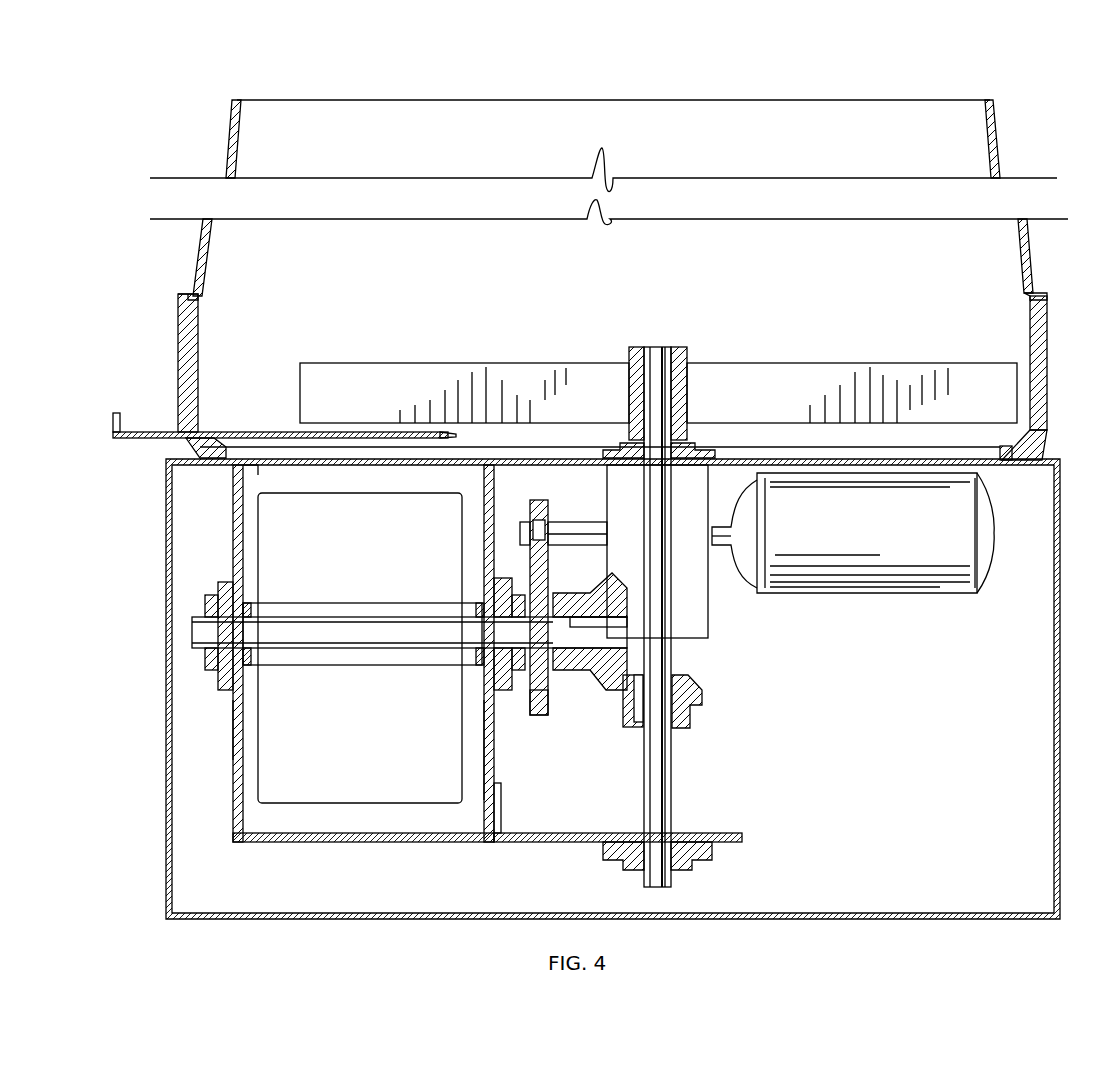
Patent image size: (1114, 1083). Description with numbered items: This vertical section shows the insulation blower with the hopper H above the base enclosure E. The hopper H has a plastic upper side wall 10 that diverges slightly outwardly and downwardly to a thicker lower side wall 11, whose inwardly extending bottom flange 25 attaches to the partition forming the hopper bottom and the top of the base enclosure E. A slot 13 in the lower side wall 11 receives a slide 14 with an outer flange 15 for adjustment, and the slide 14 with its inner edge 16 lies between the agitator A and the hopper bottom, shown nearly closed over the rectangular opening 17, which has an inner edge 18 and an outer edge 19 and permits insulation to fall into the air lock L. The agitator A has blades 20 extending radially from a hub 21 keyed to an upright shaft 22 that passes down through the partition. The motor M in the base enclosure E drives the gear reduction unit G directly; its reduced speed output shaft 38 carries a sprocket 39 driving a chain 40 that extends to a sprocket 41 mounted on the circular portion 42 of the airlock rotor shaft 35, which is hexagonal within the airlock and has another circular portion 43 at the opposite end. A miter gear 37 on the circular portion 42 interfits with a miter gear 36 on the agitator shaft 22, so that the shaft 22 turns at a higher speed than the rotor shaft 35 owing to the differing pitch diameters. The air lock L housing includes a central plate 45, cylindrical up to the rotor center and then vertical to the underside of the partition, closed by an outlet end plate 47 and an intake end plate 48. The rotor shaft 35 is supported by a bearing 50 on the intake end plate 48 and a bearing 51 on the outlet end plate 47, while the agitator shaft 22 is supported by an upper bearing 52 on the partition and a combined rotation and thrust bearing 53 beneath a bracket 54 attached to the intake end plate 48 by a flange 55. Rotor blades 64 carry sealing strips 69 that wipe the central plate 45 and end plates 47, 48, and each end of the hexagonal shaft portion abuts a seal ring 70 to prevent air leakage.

The upper side wall 10 is at (232, 148).
The lower side wall 11 is at (178, 340).
The slot 13 is at (200, 440).
The slide 14 is at (250, 432).
The outer flange 15 is at (120, 420).
The inner edge 16 is at (463, 437).
The rectangular opening 17 is at (366, 460).
The inner edge 18 is at (483, 470).
The outer edge 19 is at (248, 463).
The blades 20 is at (330, 363).
The hub 21 is at (636, 348).
The upright shaft 22 is at (660, 345).
The bottom flange 25 is at (210, 460).
The airlock rotor shaft 35 is at (386, 648).
The miter gear 36 is at (702, 700).
The miter gear 37 is at (598, 593).
The reduced speed output shaft 38 is at (590, 524).
The sprocket 39 is at (539, 504).
The chain 40 is at (548, 580).
The sprocket 41 is at (540, 716).
The circular portion 42 is at (582, 652).
The circular portion 43 is at (198, 632).
The central plate 45 is at (380, 842).
The outlet end plate 47 is at (233, 738).
The intake end plate 48 is at (494, 762).
The bearing 50 is at (504, 578).
The bearing 51 is at (230, 584).
The upper bearing 52 is at (698, 443).
The combined rotation and thrust bearing 53 is at (706, 856).
The bracket 54 is at (720, 832).
The flange 55 is at (501, 820).
The blades 64 is at (372, 559).
The sealing strip 69 is at (292, 493).
The seal ring 70 is at (250, 600).
The agitator A is at (750, 360).
The hopper H is at (1052, 290).
The gear reduction unit G is at (708, 603).
The motor M is at (880, 600).
The air lock L is at (242, 846).
The base enclosure E is at (1066, 802).